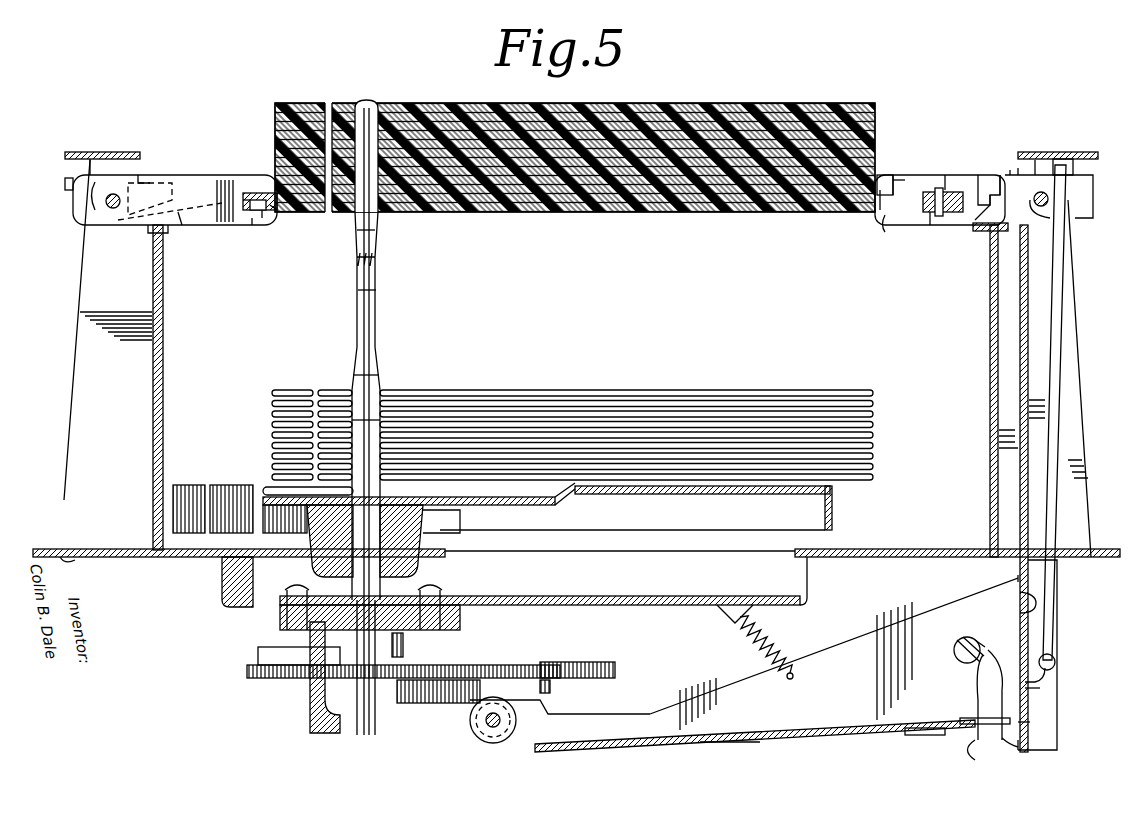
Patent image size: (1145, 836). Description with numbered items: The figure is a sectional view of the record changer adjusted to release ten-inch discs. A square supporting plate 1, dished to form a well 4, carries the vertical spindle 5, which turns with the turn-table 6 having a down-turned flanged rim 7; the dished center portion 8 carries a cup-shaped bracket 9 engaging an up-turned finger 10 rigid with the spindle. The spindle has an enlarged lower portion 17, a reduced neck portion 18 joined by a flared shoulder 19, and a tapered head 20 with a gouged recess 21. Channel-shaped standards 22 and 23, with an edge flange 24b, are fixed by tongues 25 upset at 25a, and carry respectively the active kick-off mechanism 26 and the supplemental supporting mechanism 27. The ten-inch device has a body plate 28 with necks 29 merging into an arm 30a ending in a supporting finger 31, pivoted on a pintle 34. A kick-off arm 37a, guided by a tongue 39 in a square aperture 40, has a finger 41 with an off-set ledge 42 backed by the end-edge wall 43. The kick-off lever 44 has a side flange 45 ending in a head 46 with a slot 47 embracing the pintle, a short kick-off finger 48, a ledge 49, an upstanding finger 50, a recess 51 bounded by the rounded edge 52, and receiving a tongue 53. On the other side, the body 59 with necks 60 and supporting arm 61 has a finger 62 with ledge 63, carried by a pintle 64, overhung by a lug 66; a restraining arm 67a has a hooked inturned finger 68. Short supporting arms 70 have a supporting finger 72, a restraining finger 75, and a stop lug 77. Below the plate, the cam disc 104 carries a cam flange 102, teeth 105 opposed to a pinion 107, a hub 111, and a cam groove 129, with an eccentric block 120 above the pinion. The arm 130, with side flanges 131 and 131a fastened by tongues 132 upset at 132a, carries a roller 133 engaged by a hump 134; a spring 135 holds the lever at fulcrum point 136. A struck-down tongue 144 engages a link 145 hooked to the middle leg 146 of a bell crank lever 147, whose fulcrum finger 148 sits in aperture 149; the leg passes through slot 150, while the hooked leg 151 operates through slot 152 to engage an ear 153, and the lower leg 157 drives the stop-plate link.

The supporting plate 1 is at (870, 549).
The well 4 is at (590, 597).
The spindle 5 is at (358, 302).
The turn-table 6 is at (625, 494).
The flanged rim 7 is at (832, 510).
The center portion of the turntable 8 is at (510, 505).
The cup-shaped bracket 9 is at (440, 540).
The up-turned finger 10 is at (410, 560).
The lower portion of the spindle 17 is at (382, 415).
The neck portion 18 is at (376, 290).
The flared shoulder 19 is at (378, 368).
The head 20 is at (355, 225).
The gouged recess 21 is at (380, 222).
The standard 22 is at (990, 330).
The standard 23 is at (165, 330).
The edge flange 24b is at (88, 340).
The tongue 25 is at (992, 549).
The upset portion 25a is at (1090, 557).
The active kick-off mechanism 26 is at (1013, 161).
The supplemental supporting mechanism 27 is at (176, 175).
The body plate 28 is at (1070, 152).
The neck 29 is at (1020, 172).
The arm 30a is at (895, 178).
The supporting finger 31 is at (880, 215).
The pintle 34 is at (1073, 243).
The kick-off arm 37a is at (897, 228).
The tongue 39 is at (943, 190).
The square aperture 40 is at (940, 212).
The finger 41 is at (883, 225).
The off-set ledge 42 is at (888, 175).
The end-edge wall 43 is at (905, 182).
The kick-off lever 44 is at (1020, 368).
The side flange 45 is at (1062, 368).
The head 46 is at (1075, 222).
The slot 47 is at (1040, 192).
The kick-off finger 48 is at (975, 220).
The ledge 49 is at (985, 200).
The upstanding finger 50 is at (993, 198).
The recess 51 is at (1005, 185).
The rounded edge 52 is at (1036, 160).
The tongue 53 is at (985, 231).
The body 59 is at (108, 152).
The neck 60 is at (140, 175).
The supporting arm 61 is at (215, 225).
The finger 62 is at (262, 218).
The ledge 63 is at (270, 212).
The pintle 64 is at (108, 205).
The lug 66 is at (255, 193).
The restraining arm 67a is at (248, 200).
The hooked inturned finger 68 is at (255, 225).
The supporting arm 70 is at (85, 195).
The supporting finger 72 is at (183, 226).
The restraining finger 75 is at (180, 200).
The stop lug 77 is at (65, 184).
The cam flange 102 is at (440, 703).
The cam disc 104 is at (550, 660).
The teeth 105 is at (585, 662).
The pinion 107 is at (320, 700).
The hub 111 is at (460, 625).
The eccentric block 120 is at (403, 640).
The cam groove 129 is at (500, 665).
The arm 130 is at (866, 735).
The side flange 131 is at (890, 635).
The side flange 131a is at (735, 737).
The tongue 132 is at (1030, 742).
The upset portion 132a is at (1032, 723).
The roller 133 is at (470, 728).
The hump 134 is at (548, 705).
The spring 135 is at (782, 640).
The fulcrum point 136 is at (1015, 578).
The struck-down tongue 144 is at (1073, 165).
The link 145 is at (1060, 300).
The middle leg 146 is at (1050, 672).
The bell crank lever 147 is at (985, 672).
The fulcrum finger 148 is at (980, 645).
The aperture 149 is at (955, 652).
The slot 150 is at (1042, 686).
The hooked leg 151 is at (1000, 742).
The slot 152 is at (975, 718).
The ear 153 is at (985, 745).
The lower leg 157 is at (920, 735).